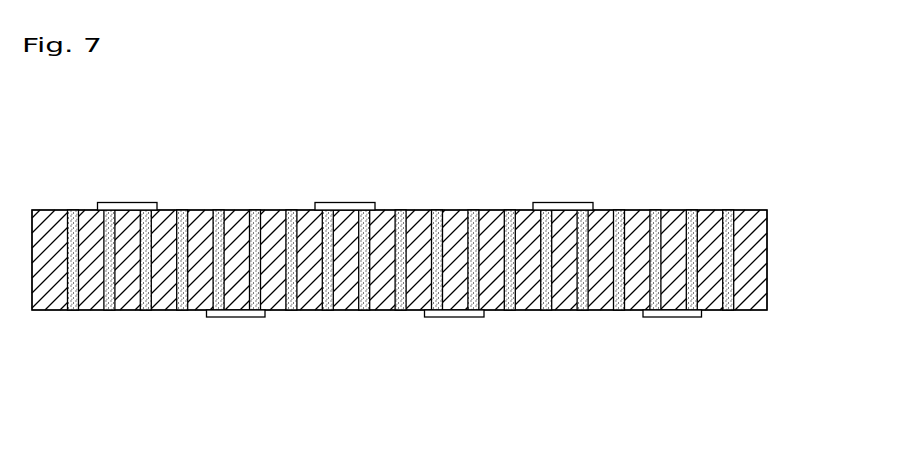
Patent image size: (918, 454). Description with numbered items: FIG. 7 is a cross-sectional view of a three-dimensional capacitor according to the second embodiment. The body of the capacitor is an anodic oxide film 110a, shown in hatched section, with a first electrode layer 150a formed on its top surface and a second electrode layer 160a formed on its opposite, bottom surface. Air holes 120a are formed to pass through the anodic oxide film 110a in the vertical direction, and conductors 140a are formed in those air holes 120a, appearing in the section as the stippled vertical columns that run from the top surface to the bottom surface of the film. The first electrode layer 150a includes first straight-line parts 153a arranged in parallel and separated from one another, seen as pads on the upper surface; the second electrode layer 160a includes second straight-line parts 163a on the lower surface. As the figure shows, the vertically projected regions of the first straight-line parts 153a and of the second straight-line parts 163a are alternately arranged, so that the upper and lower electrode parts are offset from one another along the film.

The anodic oxide film 110a is at (755, 275).
The air holes 120a is at (727, 238).
The conductors 140a is at (727, 218).
The first electrode layer 150a is at (325, 154).
The first straight-line parts 153a is at (127, 202).
The second electrode layer 160a is at (500, 367).
The second straight-line parts 163a is at (235, 317).